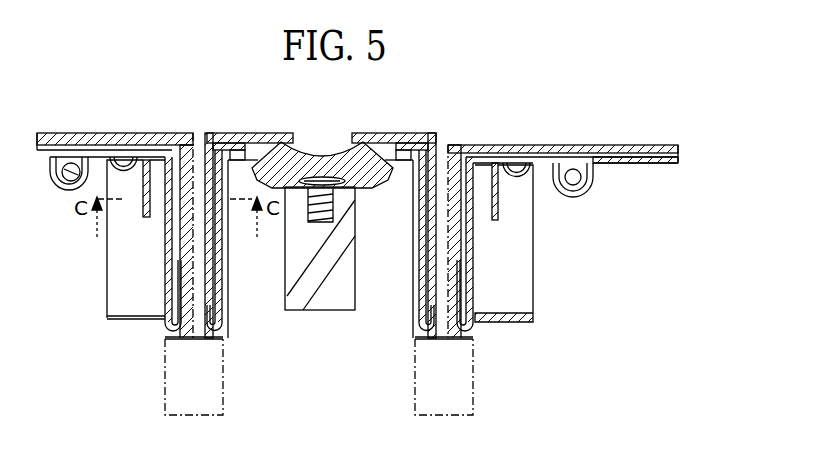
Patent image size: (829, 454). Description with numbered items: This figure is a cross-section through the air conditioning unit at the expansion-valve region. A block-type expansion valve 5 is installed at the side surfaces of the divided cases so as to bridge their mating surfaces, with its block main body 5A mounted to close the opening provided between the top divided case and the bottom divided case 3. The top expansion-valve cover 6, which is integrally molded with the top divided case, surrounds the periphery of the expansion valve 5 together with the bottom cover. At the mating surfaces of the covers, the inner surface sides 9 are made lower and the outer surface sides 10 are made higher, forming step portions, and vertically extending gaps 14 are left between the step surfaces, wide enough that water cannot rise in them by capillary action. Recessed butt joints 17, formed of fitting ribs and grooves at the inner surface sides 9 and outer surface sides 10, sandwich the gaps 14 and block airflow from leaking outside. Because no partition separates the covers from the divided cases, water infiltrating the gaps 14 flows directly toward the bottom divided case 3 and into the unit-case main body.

The bottom divided case 3 is at (606, 143).
The expansion valve 5 is at (331, 327).
The block main body 5A is at (297, 290).
The top expansion-valve cover 6 is at (191, 347).
The inner surface side 9 is at (225, 272).
The outer surface side 10 is at (107, 252).
The gap 14 is at (200, 272).
The recessed butt joint 17 is at (175, 303).